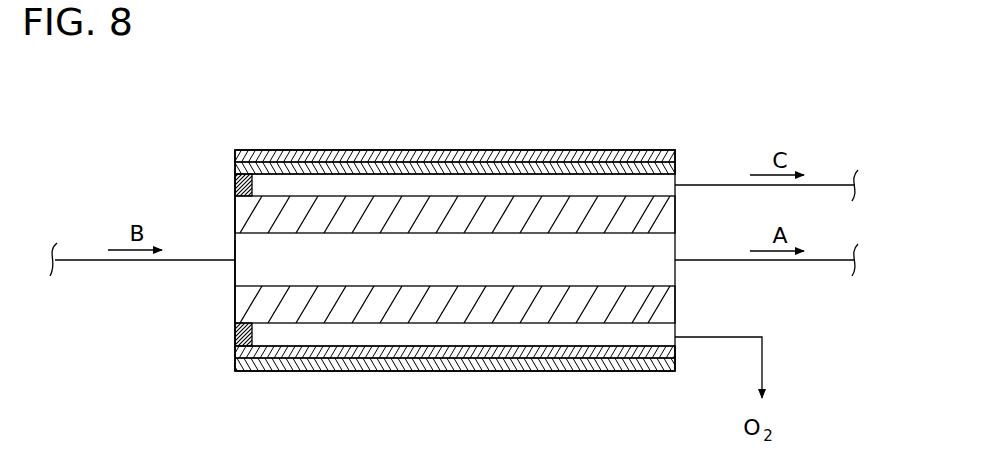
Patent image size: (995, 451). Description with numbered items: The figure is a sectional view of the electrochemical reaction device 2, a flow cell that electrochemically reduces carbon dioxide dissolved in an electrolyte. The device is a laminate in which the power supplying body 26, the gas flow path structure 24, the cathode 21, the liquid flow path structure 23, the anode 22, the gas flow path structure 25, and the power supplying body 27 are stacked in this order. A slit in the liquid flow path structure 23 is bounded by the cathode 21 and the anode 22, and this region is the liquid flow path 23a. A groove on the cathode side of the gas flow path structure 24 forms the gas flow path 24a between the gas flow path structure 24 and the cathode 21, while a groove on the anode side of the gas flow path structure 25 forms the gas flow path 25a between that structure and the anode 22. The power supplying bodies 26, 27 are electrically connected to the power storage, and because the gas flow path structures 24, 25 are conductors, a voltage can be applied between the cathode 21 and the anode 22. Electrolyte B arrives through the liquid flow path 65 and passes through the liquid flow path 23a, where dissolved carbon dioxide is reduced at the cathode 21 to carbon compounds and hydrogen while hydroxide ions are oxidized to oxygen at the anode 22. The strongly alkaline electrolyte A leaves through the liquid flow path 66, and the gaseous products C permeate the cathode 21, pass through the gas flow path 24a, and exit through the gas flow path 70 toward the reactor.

The electrochemical reaction device 2 is at (612, 109).
The cathode 21 is at (675, 215).
The anode 22 is at (675, 302).
The liquid flow path structure 23 is at (235, 248).
The liquid flow path 23a is at (235, 278).
The gas flow path structure 24 is at (485, 134).
The gas flow path 24a is at (430, 176).
The gas flow path structure 25 is at (485, 380).
The gas flow path 25a is at (400, 344).
The power supplying body 26 is at (537, 150).
The power supplying body 27 is at (515, 372).
The liquid flow path 65 is at (78, 261).
The liquid flow path 66 is at (826, 261).
The gas flow path 70 is at (836, 185).